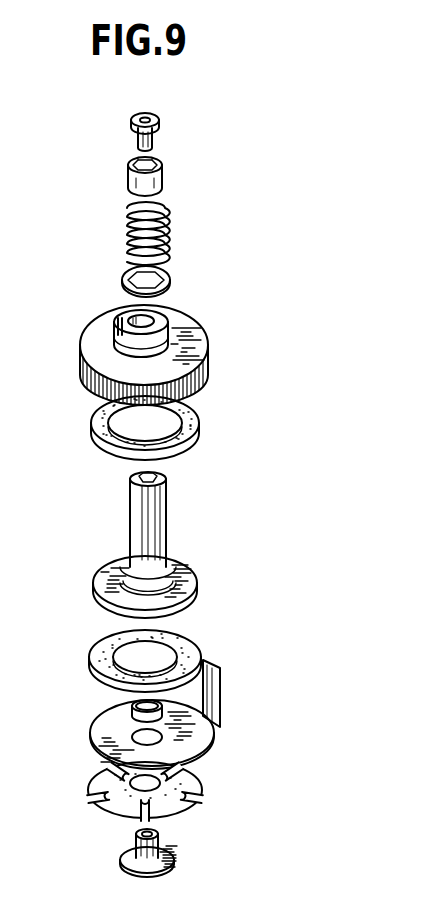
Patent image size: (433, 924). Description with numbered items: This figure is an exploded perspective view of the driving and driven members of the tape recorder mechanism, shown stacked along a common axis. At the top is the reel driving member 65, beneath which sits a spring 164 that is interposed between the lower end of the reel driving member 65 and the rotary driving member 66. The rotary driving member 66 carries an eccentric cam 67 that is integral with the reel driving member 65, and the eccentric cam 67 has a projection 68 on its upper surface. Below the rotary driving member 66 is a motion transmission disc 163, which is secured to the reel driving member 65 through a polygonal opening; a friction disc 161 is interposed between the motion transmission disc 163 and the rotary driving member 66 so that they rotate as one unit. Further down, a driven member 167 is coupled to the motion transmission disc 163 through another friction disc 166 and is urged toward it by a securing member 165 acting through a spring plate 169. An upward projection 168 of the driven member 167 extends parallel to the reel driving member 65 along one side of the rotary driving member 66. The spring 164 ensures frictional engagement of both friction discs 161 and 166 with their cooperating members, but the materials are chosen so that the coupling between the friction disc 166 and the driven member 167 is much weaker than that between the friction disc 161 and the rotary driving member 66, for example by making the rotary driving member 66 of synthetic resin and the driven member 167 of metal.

The reel driving member 65 is at (166, 178).
The spring 164 is at (166, 243).
The rotary driving member 66 is at (197, 356).
The eccentric cam 67 is at (120, 314).
The projection 68 is at (117, 330).
The friction disc 161 is at (196, 433).
The motion transmission disc 163 is at (195, 590).
The friction disc 166 is at (190, 650).
The upward projection 168 is at (212, 688).
The driven member 167 is at (196, 738).
The spring plate 169 is at (190, 786).
The securing member 165 is at (170, 858).